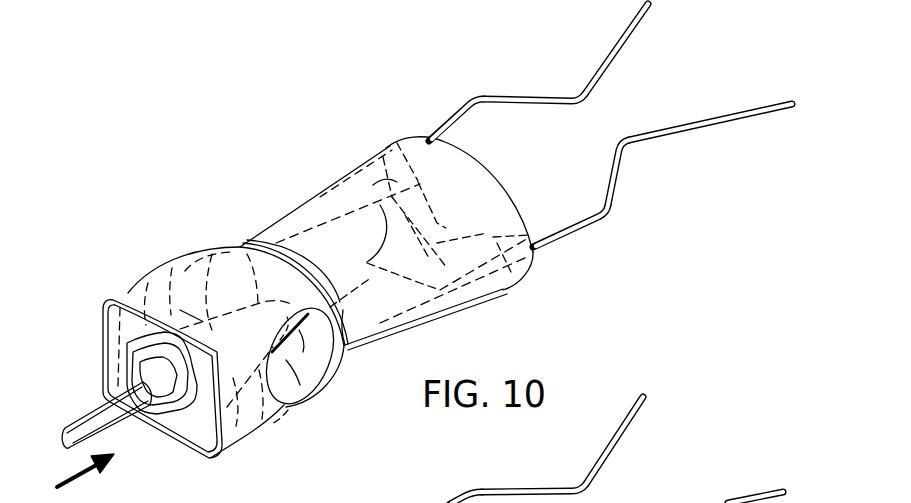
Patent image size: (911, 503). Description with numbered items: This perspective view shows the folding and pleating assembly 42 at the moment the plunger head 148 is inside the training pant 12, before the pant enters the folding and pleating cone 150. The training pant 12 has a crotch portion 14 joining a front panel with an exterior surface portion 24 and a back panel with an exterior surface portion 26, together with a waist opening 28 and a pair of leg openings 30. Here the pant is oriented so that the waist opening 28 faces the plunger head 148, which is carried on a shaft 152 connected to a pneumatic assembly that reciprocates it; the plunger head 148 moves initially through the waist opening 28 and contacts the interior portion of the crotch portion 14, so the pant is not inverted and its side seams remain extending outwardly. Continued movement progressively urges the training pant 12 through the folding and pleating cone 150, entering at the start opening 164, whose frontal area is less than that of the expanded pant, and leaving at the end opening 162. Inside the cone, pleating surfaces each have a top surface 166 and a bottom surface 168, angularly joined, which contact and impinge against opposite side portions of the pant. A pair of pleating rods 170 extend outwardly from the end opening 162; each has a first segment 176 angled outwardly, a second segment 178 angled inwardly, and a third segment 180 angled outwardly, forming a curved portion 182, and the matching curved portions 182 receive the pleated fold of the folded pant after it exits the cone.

The training pant 12 is at (263, 434).
The crotch portion 14 is at (286, 255).
The exterior surface portion 24 is at (223, 280).
The exterior surface portion 26 is at (300, 422).
The waist opening 28 is at (105, 362).
The leg openings 30 is at (160, 262).
The folding and pleating assembly 42 is at (230, 111).
The plunger head 148 is at (202, 437).
The folding and pleating cone 150 is at (400, 137).
The shaft 152 is at (93, 416).
The end opening 162 is at (504, 183).
The start opening 164 is at (346, 346).
The top surface 166 is at (441, 236).
The bottom surface 168 is at (370, 276).
The pleating rods 170 is at (733, 48).
The first segment 176 is at (455, 117).
The second segment 178 is at (547, 98).
The third segment 180 is at (626, 30).
The curved portion 182 is at (603, 102).